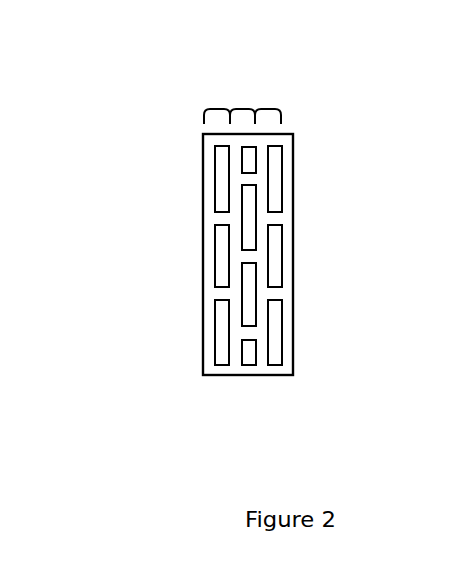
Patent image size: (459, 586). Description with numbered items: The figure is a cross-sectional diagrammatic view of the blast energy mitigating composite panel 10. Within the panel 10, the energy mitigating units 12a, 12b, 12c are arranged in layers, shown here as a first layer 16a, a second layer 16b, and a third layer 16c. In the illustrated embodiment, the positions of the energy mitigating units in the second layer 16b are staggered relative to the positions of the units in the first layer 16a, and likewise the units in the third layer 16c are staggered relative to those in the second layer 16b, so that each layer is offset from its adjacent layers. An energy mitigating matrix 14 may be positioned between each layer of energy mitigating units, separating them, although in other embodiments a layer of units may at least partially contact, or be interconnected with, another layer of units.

The panel 10 is at (165, 95).
The energy mitigating matrix 14 is at (289, 254).
The energy mitigating unit 12a is at (179, 287).
The energy mitigating unit 12b is at (219, 300).
The energy mitigating unit 12c is at (310, 294).
The first layer 16a is at (218, 108).
The second layer 16b is at (243, 108).
The third layer 16c is at (268, 108).